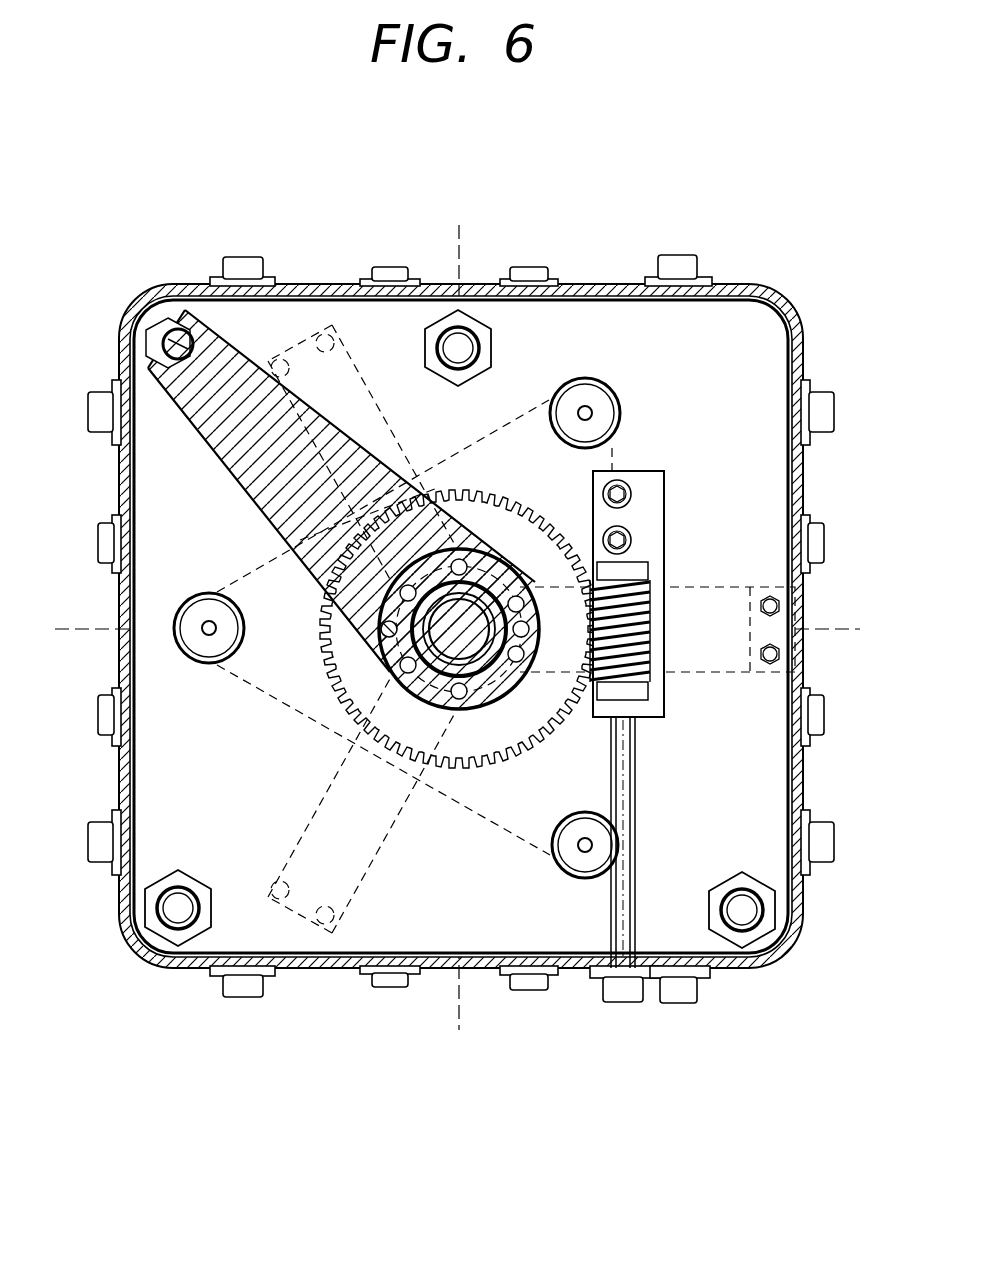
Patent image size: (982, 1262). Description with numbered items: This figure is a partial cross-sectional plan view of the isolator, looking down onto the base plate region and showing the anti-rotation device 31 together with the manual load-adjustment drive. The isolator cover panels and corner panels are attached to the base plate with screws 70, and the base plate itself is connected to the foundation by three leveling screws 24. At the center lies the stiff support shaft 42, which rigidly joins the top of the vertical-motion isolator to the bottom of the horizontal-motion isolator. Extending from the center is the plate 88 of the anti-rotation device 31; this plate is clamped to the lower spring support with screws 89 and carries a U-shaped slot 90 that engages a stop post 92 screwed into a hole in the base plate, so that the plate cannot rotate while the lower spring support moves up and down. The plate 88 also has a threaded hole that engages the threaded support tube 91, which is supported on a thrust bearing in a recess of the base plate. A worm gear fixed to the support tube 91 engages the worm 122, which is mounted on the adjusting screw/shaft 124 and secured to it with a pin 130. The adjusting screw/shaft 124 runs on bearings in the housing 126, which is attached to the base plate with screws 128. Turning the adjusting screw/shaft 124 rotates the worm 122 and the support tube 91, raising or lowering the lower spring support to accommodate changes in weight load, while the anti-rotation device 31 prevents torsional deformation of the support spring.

The anti-rotation device 31 is at (126, 290).
The screws 70 is at (243, 270).
The leveling screws 24 is at (480, 350).
The stop post 92 is at (176, 340).
The U-shaped slot 90 is at (150, 345).
The plate 88 is at (218, 425).
The screws 89 is at (382, 634).
The support shaft 42 is at (440, 662).
The threaded support tube 91 is at (490, 678).
The screws 128 is at (620, 490).
The housing 126 is at (645, 512).
The worm 122 is at (625, 660).
The pin 130 is at (630, 690).
The adjusting screw/shaft 124 is at (618, 968).